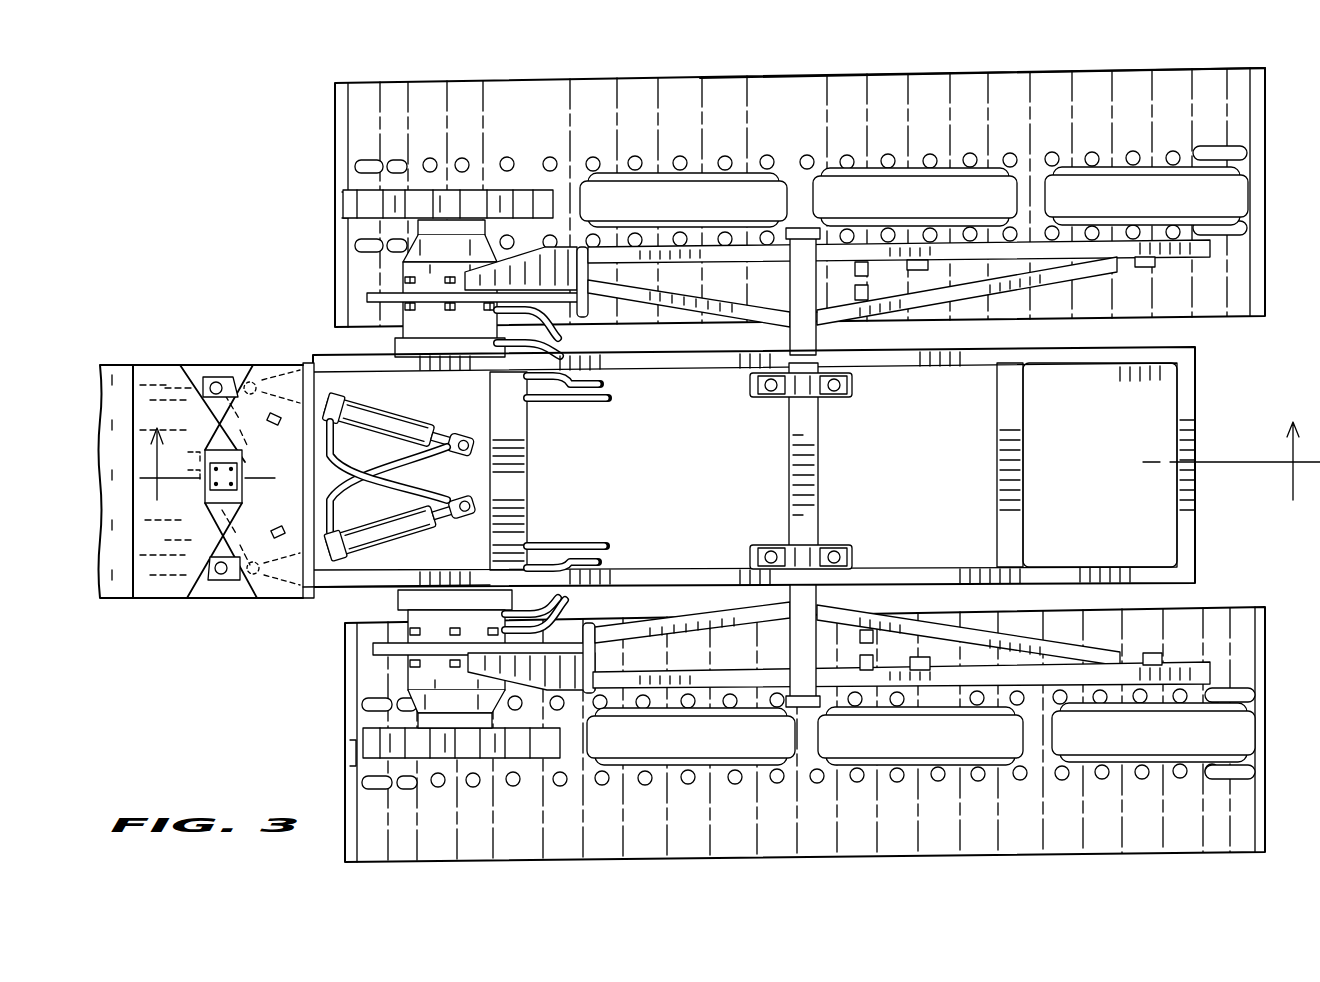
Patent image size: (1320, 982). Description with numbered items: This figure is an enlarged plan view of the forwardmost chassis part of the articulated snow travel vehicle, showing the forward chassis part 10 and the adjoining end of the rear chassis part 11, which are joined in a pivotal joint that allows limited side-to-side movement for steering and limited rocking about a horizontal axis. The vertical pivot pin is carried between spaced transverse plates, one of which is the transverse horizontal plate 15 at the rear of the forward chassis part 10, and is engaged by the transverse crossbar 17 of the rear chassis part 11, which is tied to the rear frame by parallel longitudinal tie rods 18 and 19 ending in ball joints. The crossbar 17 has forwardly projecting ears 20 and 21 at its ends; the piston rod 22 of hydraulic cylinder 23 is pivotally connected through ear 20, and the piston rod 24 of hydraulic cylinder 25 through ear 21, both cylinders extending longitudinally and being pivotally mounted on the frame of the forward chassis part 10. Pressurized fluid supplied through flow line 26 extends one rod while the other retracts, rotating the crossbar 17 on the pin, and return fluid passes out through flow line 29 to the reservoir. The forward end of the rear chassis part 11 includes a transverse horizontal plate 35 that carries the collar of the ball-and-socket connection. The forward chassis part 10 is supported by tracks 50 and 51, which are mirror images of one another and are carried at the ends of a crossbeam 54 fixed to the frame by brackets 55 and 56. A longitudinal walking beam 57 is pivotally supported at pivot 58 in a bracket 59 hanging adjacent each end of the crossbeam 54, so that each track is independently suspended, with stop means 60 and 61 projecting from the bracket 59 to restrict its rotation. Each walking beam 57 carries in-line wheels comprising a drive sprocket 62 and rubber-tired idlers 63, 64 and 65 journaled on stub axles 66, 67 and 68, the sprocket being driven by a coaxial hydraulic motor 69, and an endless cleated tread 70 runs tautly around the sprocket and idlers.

The forward chassis part 10 is at (1214, 396).
The rear chassis part 11 is at (117, 346).
The transverse horizontal plate 15 is at (247, 475).
The crossbar 17 is at (215, 368).
The tie rod 18 is at (200, 382).
The tie rod 19 is at (195, 597).
The ear 20 is at (242, 378).
The ear 21 is at (240, 597).
The piston rod 22 is at (318, 360).
The hydraulic cylinder 23 is at (378, 410).
The piston rod 24 is at (310, 600).
The hydraulic cylinder 25 is at (388, 548).
The flow line 26 is at (545, 543).
The flow line 29 is at (560, 405).
The transverse horizontal plate 35 is at (147, 600).
The track 50 is at (319, 133).
The track 51 is at (336, 848).
The crossbeam 54 is at (820, 440).
The bracket 55 is at (855, 383).
The bracket 56 is at (855, 553).
The walking beam 57 is at (1025, 245).
The pivot 58 is at (803, 228).
The bracket 59 is at (830, 325).
The stop means 60 is at (870, 270).
The stop means 61 is at (735, 290).
The drive sprocket 62 is at (525, 190).
The idler 63 is at (715, 190).
The idler 64 is at (940, 185).
The idler 65 is at (1105, 188).
The stub axle 66 is at (700, 287).
The stub axle 67 is at (920, 275).
The stub axle 68 is at (1143, 265).
The hydraulic motor 69 is at (400, 270).
The tread 70 is at (940, 71).